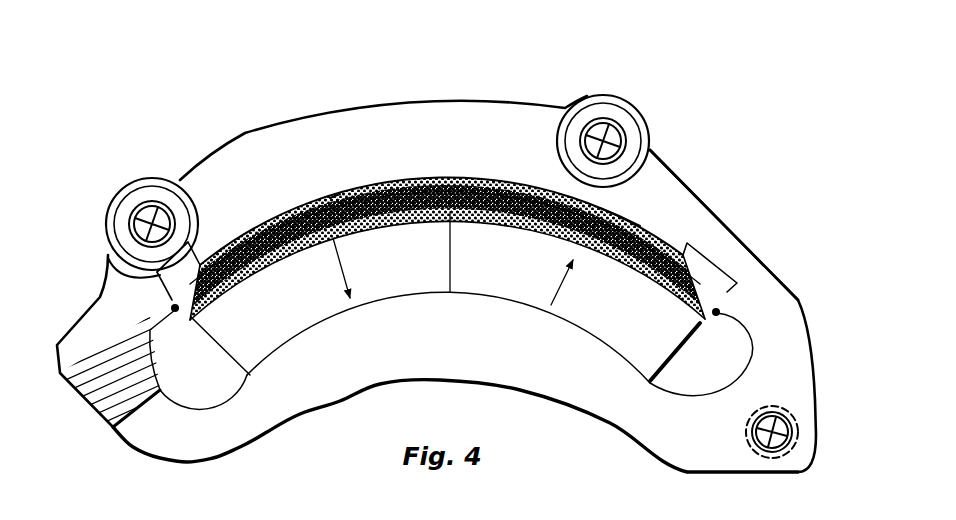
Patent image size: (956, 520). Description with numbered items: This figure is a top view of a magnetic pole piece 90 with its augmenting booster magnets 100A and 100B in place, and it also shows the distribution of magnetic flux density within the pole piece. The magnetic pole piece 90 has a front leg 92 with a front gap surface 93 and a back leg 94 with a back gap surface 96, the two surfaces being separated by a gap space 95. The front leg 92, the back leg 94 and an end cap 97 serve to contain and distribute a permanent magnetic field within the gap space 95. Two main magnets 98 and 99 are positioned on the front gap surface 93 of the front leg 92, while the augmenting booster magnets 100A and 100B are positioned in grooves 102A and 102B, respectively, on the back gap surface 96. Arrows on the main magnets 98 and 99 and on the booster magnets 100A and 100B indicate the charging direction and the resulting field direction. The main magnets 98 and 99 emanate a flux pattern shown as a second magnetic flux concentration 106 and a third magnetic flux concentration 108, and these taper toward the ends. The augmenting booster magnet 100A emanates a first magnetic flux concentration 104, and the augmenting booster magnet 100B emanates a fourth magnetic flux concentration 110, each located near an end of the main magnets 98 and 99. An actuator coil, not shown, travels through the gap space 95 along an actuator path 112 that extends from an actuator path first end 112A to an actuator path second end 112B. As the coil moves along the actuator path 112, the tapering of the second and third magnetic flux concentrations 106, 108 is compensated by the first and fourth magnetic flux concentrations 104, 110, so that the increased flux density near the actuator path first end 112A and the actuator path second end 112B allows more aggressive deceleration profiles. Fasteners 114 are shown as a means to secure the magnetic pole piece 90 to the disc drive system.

The magnetic pole piece 90 is at (580, 62).
The front leg 92 is at (662, 430).
The front gap surface 93 is at (620, 422).
The back leg 94 is at (682, 198).
The gap space 95 is at (725, 337).
The back gap surface 96 is at (667, 197).
The end cap 97 is at (112, 398).
The main magnet 98 is at (372, 273).
The main magnet 99 is at (577, 290).
The augmenting booster magnet 100A is at (197, 208).
The augmenting booster magnet 100B is at (700, 262).
The groove 102A is at (150, 297).
The groove 102B is at (733, 287).
The first magnetic flux concentration 104 is at (212, 258).
The second magnetic flux concentration 106 is at (330, 198).
The third magnetic flux concentration 108 is at (622, 213).
The fourth magnetic flux concentration 110 is at (690, 246).
The actuator path 112 is at (452, 188).
The actuator path first end 112A is at (160, 308).
The actuator path second end 112B is at (731, 304).
The fastener 114 is at (152, 178).